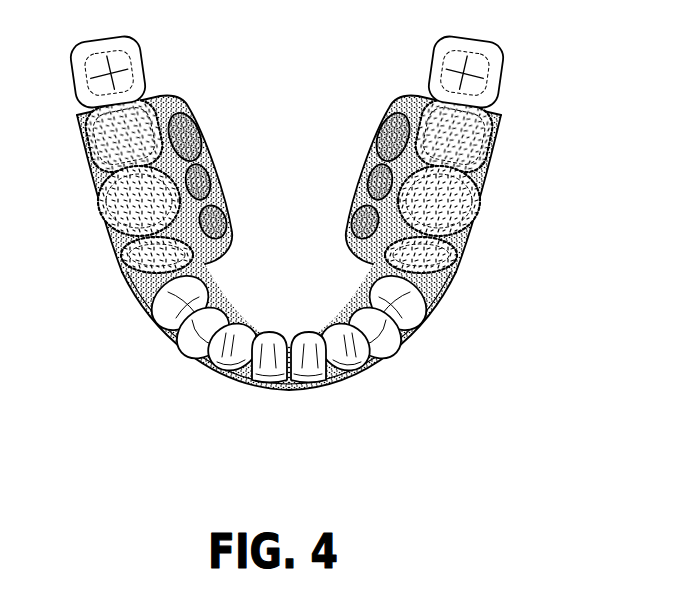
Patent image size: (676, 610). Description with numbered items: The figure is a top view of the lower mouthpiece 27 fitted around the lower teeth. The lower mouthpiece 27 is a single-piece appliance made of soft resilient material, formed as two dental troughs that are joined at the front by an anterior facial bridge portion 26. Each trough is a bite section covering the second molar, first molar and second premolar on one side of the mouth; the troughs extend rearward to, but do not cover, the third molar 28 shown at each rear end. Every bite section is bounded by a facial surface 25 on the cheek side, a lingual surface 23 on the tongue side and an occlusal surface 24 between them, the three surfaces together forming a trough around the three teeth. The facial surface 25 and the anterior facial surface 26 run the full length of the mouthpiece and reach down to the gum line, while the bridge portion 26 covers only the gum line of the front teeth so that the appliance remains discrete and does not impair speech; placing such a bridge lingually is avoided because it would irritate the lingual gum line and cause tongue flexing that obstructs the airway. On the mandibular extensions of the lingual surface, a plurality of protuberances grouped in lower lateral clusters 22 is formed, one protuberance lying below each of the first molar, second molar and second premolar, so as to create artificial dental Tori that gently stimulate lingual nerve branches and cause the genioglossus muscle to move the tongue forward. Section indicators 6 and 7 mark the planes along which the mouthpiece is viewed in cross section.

The lower lateral clusters 22 is at (193, 137).
The lingual surface 23 is at (223, 227).
The occlusal surface 24 is at (107, 150).
The facial surface 25 is at (112, 259).
The anterior facial bridge portion 26 is at (230, 384).
The lower mouthpiece 27 is at (195, 77).
The third molar 28 is at (502, 86).
The section line 6- 6 is at (322, 461).
The section line 7- 7 is at (373, 128).